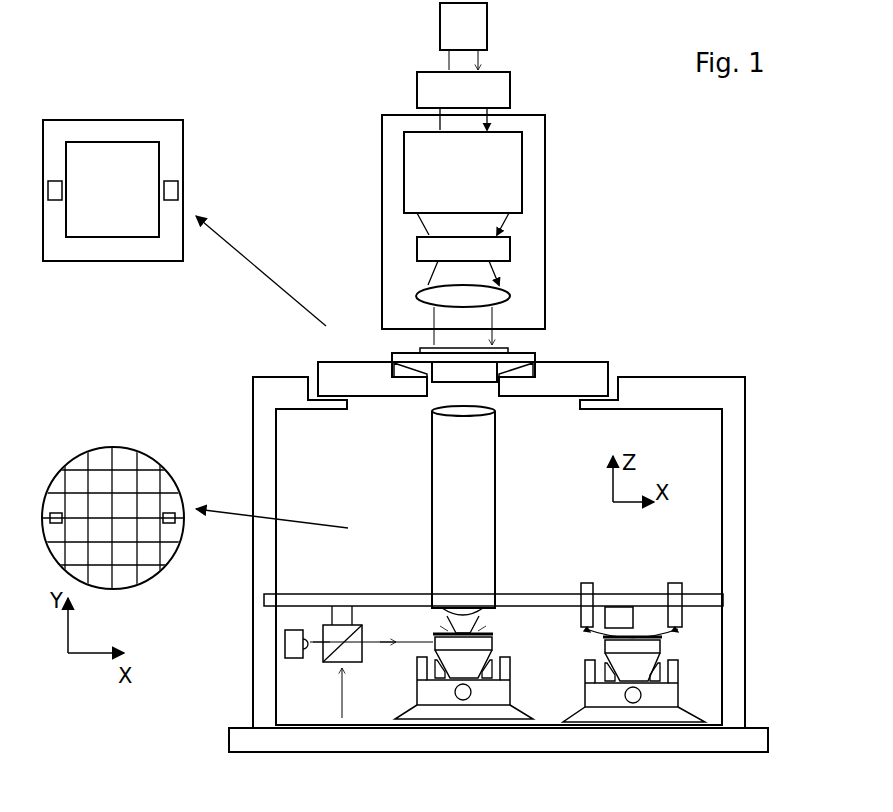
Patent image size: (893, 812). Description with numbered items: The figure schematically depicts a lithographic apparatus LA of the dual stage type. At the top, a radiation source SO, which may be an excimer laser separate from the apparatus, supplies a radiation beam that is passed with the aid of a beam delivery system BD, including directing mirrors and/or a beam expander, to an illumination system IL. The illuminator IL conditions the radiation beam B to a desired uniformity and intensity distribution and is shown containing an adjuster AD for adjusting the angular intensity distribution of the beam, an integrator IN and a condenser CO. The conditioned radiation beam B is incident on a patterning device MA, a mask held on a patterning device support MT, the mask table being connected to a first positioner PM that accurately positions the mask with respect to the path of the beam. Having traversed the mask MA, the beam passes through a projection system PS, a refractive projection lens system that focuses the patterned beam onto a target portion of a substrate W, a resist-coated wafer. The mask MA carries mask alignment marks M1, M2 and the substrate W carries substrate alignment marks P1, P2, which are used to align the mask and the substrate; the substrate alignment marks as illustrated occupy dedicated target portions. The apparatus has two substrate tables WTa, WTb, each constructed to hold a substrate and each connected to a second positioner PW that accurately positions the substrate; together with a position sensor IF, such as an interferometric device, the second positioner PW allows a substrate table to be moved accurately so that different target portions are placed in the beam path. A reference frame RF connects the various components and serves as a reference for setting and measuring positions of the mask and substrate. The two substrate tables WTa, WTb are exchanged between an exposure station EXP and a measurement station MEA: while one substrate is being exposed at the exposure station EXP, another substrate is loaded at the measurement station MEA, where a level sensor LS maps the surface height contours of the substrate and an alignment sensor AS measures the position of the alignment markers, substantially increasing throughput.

The radiation source SO is at (487, 30).
The beam delivery system BD is at (510, 98).
The illumination system IL is at (545, 152).
The adjuster AD is at (522, 197).
The integrator IN is at (510, 245).
The condenser CO is at (510, 296).
The radiation beam B is at (462, 349).
The patterning device MA is at (415, 353).
The mask alignment mark M1 is at (171, 181).
The mask alignment mark M2 is at (52, 181).
The first positioner PM is at (318, 362).
The patterning device support MT is at (598, 362).
The lithographic apparatus LA is at (650, 198).
The projection system PS is at (495, 498).
The reference frame RF is at (548, 594).
The position sensor IF is at (318, 670).
The substrate W is at (433, 633).
The substrate alignment mark P1 is at (55, 513).
The substrate alignment mark P2 is at (169, 513).
The substrate table WTa is at (492, 645).
The substrate table WTb is at (660, 647).
The second positioner PW is at (410, 700).
The level sensor LS is at (678, 584).
The alignment sensor AS is at (617, 612).
The exposure station EXP is at (460, 770).
The measurement station MEA is at (625, 770).